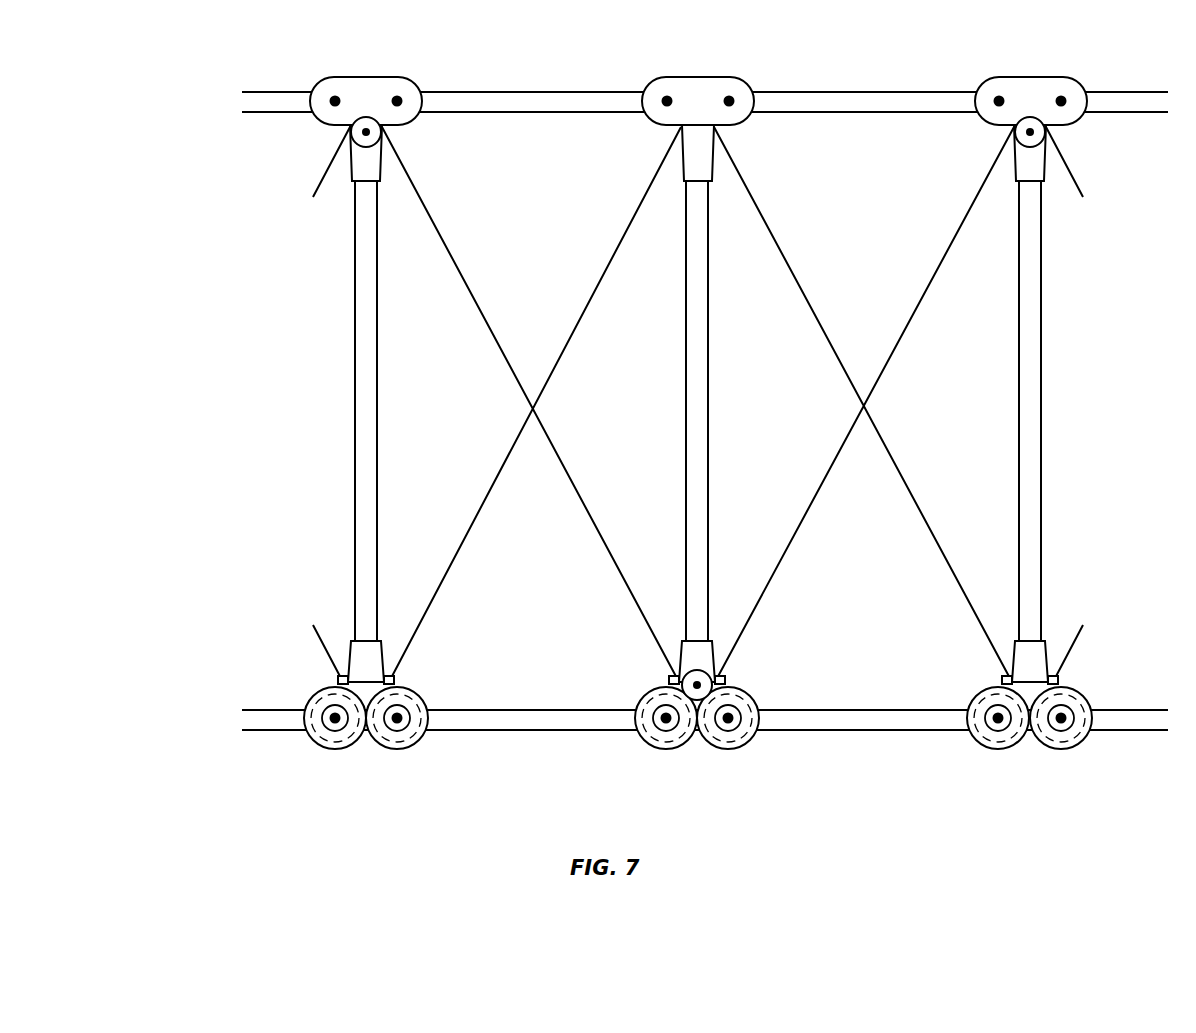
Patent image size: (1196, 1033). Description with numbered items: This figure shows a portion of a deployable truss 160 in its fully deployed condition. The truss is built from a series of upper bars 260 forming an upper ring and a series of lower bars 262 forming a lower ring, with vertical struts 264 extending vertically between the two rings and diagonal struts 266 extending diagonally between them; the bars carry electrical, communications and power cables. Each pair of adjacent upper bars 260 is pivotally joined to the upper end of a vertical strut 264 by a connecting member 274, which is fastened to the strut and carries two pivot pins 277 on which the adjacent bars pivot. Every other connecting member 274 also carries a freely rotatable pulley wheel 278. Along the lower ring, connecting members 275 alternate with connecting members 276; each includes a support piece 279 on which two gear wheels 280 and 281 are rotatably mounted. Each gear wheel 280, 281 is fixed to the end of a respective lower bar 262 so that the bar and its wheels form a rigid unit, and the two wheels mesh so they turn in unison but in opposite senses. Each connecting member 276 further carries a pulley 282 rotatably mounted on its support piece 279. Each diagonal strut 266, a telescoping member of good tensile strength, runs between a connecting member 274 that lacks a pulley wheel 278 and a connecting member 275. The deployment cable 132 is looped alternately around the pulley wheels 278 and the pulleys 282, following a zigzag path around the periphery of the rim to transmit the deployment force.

The truss assembly 160 is at (256, 275).
The deployment cable 132 is at (418, 193).
The upper bar 260 is at (515, 100).
The lower bar 262 is at (531, 720).
The vertical strut 264 is at (355, 355).
The diagonal strut 266 is at (620, 244).
The connecting member 274 is at (365, 77).
The connecting member 275 is at (358, 758).
The connecting member 276 is at (691, 758).
The pivot pin 277 is at (333, 99).
The pulley wheel 278 is at (362, 140).
The support piece 279 is at (694, 655).
The gear wheel 280 is at (318, 695).
The gear wheel 281 is at (412, 693).
The pulley 282 is at (703, 678).